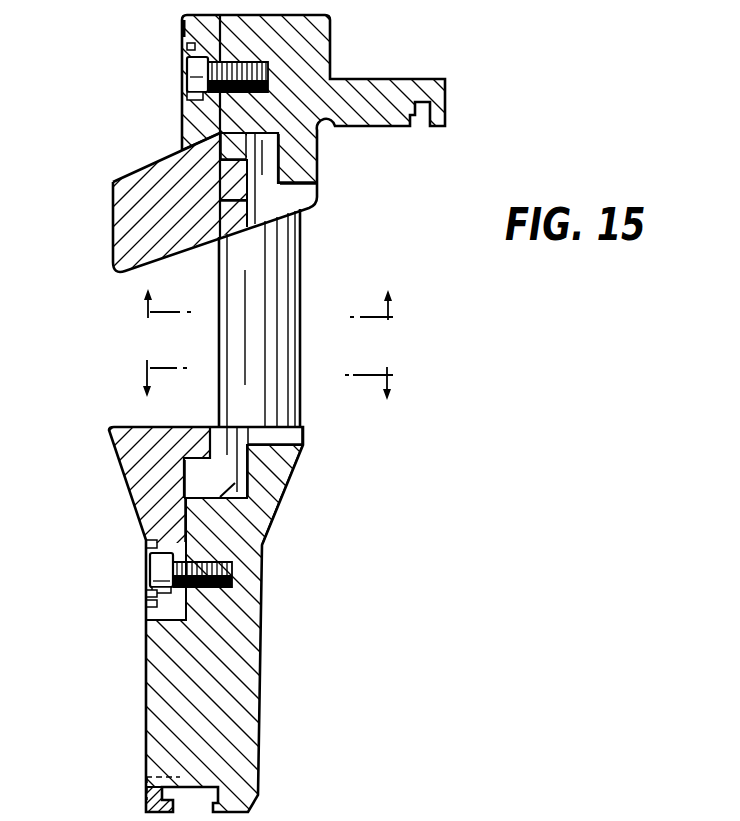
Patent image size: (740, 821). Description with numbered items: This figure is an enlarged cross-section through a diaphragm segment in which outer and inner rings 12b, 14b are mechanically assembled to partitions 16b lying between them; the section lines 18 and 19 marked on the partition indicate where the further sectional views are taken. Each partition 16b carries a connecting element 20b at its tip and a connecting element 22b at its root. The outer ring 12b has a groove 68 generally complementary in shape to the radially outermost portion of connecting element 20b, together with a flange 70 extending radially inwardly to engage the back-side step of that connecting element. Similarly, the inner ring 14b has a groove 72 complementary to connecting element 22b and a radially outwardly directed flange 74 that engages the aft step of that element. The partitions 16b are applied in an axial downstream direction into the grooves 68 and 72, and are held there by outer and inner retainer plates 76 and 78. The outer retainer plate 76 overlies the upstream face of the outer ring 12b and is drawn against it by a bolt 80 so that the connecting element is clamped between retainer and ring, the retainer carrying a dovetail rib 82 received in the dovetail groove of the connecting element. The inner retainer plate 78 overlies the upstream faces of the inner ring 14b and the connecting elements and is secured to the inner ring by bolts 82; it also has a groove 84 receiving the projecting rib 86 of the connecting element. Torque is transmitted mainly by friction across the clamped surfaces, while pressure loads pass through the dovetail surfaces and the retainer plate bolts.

The outer ring 12b is at (334, 27).
The inner ring 14b is at (235, 682).
The partition 16b is at (297, 273).
The section line 18- 18 is at (269, 302).
The section line 19- 19 is at (269, 380).
The connecting element 20b is at (230, 147).
The connecting element 22b is at (228, 452).
The groove 68 is at (287, 153).
The flange 70 is at (313, 170).
The groove 72 is at (264, 505).
The flange 74 is at (282, 463).
The outer retainer plate 76 is at (141, 165).
The inner retainer plate 78 is at (120, 450).
The bolt 80 is at (186, 70).
The dovetail rib / bolts 82 is at (218, 210).
The groove 84 is at (187, 487).
The projecting rib 86 is at (195, 465).